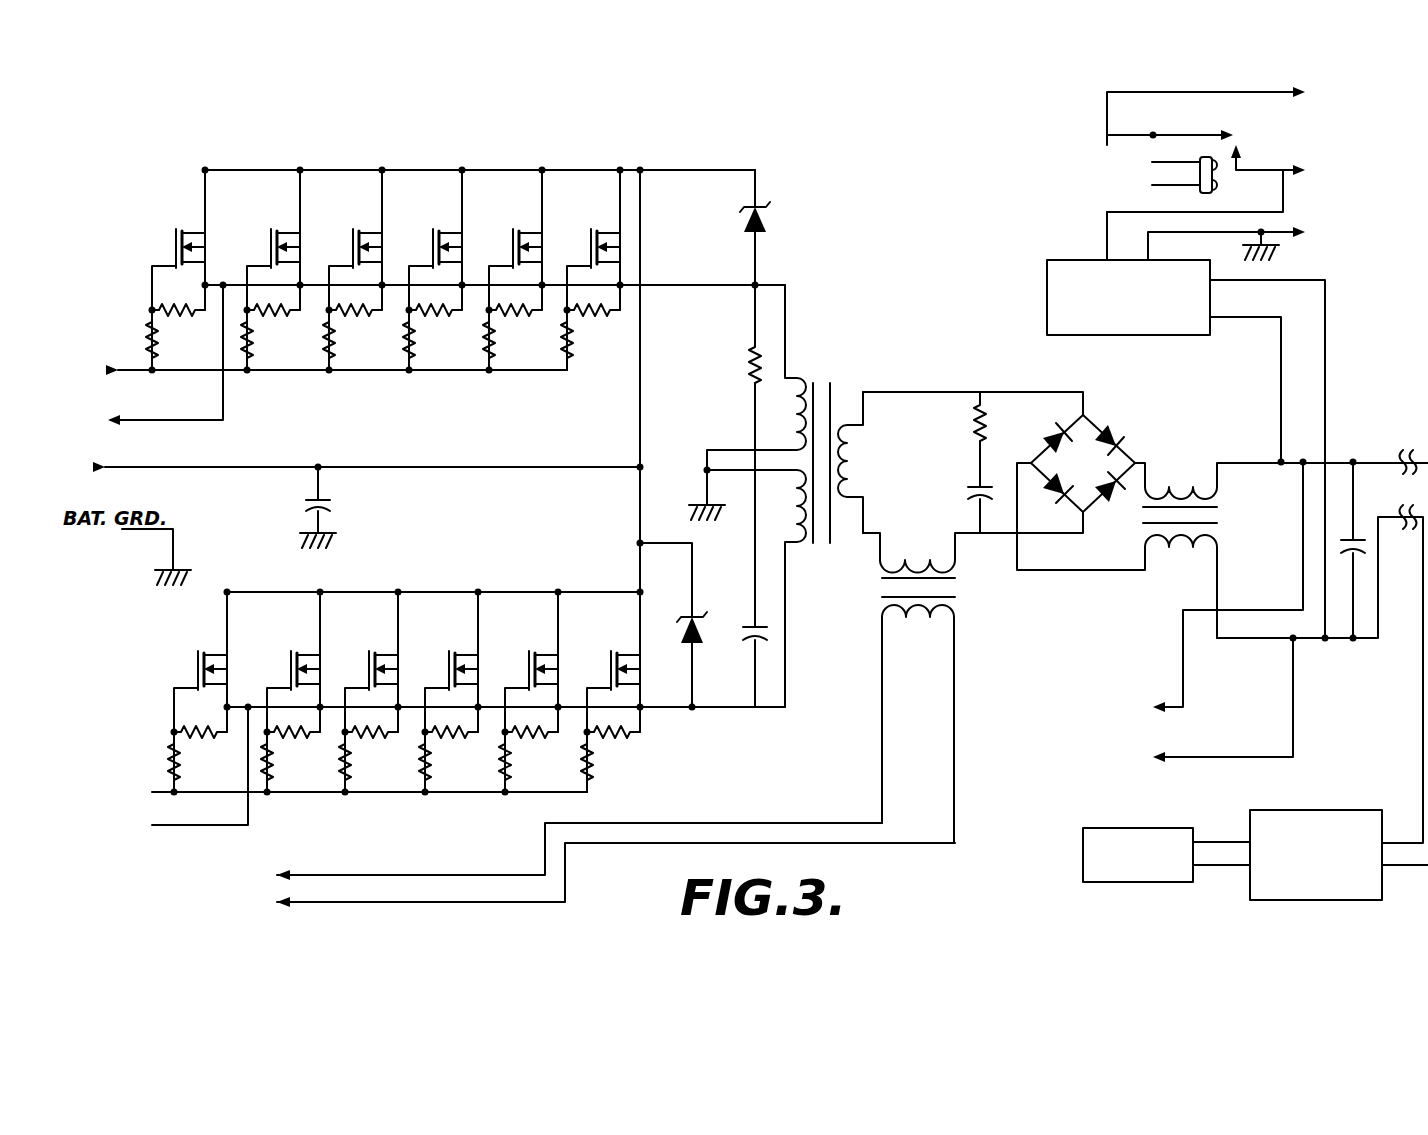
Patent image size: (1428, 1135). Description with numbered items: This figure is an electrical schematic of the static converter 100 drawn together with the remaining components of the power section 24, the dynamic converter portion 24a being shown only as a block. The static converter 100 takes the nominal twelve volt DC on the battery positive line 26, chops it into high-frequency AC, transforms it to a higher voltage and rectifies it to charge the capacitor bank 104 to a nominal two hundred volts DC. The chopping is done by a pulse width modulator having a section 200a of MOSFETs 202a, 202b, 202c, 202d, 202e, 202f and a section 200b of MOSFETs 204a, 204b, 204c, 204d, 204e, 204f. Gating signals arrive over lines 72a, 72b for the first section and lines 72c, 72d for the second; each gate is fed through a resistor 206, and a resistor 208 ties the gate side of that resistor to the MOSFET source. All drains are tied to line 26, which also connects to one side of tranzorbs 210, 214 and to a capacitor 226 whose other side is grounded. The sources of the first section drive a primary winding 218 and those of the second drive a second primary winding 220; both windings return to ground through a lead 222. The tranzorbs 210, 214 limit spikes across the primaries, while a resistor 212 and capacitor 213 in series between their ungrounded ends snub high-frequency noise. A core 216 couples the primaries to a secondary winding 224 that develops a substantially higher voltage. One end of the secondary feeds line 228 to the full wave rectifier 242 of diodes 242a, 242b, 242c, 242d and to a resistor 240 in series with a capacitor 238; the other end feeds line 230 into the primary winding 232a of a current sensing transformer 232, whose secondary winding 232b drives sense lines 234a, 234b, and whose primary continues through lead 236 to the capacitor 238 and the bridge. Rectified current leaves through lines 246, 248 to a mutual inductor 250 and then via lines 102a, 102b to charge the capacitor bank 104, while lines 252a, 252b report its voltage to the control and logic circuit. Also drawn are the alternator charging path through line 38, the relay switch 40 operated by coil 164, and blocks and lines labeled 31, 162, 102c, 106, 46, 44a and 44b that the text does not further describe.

The static converter 100 is at (896, 150).
The section 200a is at (155, 152).
The section 200b is at (145, 672).
The MOSFET 202a is at (176, 232).
The MOSFET 202b is at (271, 232).
The MOSFET 202c is at (353, 232).
The MOSFET 202d is at (433, 232).
The MOSFET 202e is at (513, 232).
The MOSFET 202f is at (591, 232).
The MOSFET 204a is at (198, 654).
The MOSFET 204b is at (291, 654).
The MOSFET 204c is at (369, 654).
The MOSFET 204d is at (449, 654).
The MOSFET 204e is at (529, 654).
The MOSFET 204f is at (611, 654).
The resistor 206 is at (150, 330).
The resistor 208 is at (188, 318).
The line 72a is at (125, 368).
The line 72b is at (225, 398).
The line 72c is at (152, 790).
The line 72d is at (250, 825).
The line 26 is at (210, 468).
The capacitor 226 is at (332, 505).
The tranzorb 210 is at (772, 222).
The resistor 212 is at (755, 352).
The capacitor 213 is at (750, 642).
The tranzorb 214 is at (690, 615).
The core 216 is at (835, 370).
The primary winding 218 is at (797, 420).
The second primary winding 220 is at (797, 515).
The lead 222 is at (707, 455).
The secondary winding 224 is at (855, 455).
The line 228 is at (905, 392).
The line 230 is at (870, 520).
The current sensing transformer 232 is at (962, 600).
The primary winding 232a is at (885, 568).
The secondary winding 232b is at (882, 622).
The lead 236 is at (998, 535).
The line 234a is at (470, 875).
The line 234b is at (957, 690).
The capacitor 238 is at (968, 490).
The resistor 240 is at (975, 392).
The full wave rectifier 242 is at (1101, 456).
The diode 242a is at (1112, 430).
The diode 242b is at (1053, 436).
The diode 242c is at (1115, 510).
The diode 242d is at (1058, 515).
The line 246 is at (1145, 470).
The line 248 is at (1140, 572).
The mutual inductor 250 is at (1220, 515).
The capacitor bank 104 is at (1345, 548).
The line 102a is at (1280, 345).
The line 102b is at (1325, 423).
The DC bus line 102c is at (1352, 645).
The line 252a is at (1183, 638).
The line 252b is at (1293, 728).
The power section 24 is at (1086, 791).
The inverter 106 is at (1313, 810).
The load 46 is at (1138, 828).
The inverter output line 44a is at (1222, 842).
The inverter output line 44b is at (1222, 865).
The dynamic converter 24a is at (1047, 297).
The line 38 is at (1107, 103).
The relay switch 40 is at (1203, 135).
The converter input line 162 is at (1107, 225).
The coil 164 is at (1200, 188).
The battery ground line 31 is at (1148, 248).